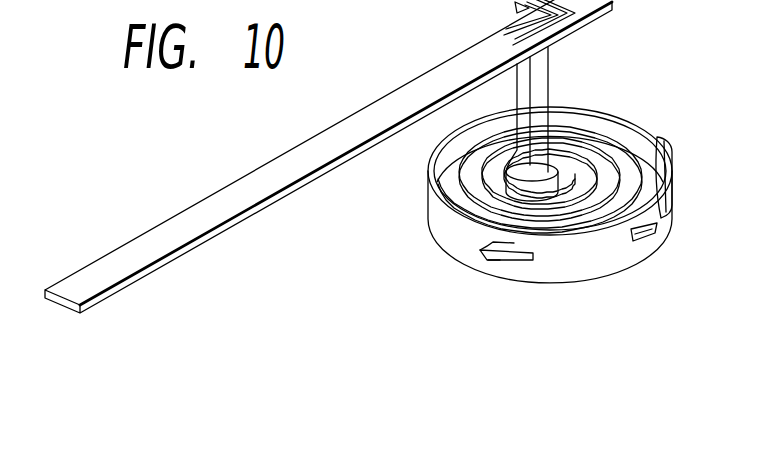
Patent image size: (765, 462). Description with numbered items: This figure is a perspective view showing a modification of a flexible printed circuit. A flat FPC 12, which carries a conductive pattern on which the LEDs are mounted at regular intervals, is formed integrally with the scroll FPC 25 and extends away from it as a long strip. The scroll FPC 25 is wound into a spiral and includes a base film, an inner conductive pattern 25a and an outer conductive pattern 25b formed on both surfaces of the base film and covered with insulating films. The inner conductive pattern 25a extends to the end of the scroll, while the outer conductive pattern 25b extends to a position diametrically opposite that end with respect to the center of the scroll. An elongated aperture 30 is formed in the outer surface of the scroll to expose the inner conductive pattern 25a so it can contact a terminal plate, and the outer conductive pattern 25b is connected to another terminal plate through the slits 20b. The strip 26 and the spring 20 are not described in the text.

The FPC 12 is at (360, 157).
The FPC 25 is at (620, 113).
The inner conductive pattern 25a is at (651, 237).
The outer conductive pattern 25b is at (521, 262).
The strip / spring inner end member 26 is at (540, 80).
The elongated aperture 30 is at (642, 246).
The slits 20b is at (498, 263).
The spiral spring 20 is at (540, 179).